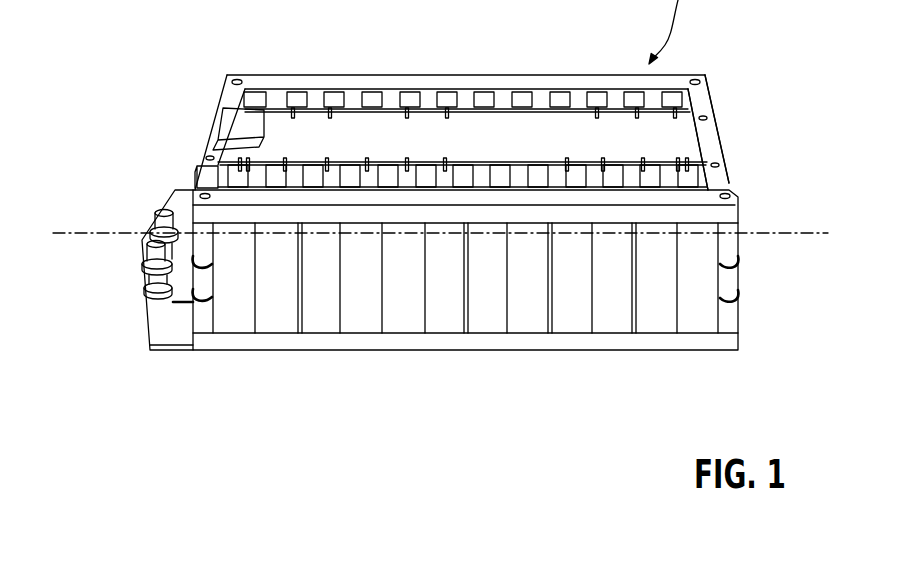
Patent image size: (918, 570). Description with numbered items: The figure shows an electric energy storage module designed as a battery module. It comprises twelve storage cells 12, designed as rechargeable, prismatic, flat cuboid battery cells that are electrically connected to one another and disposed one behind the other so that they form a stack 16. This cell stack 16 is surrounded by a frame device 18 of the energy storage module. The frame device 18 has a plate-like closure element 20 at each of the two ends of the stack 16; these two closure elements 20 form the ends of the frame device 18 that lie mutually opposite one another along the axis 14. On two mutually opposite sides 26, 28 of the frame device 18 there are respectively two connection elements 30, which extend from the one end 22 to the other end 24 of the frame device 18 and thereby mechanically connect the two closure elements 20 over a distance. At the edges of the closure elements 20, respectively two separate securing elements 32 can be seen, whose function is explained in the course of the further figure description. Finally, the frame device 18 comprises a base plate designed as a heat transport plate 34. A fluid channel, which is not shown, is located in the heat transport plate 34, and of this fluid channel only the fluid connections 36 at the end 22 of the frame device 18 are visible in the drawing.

The storage cells 12 is at (317, 323).
The axis 14 is at (73, 233).
The stack 16 is at (671, 99).
The frame device 18 is at (221, 74).
The closure element 20 is at (705, 133).
The end 22 is at (210, 128).
The end 24 is at (755, 325).
The side 26 is at (582, 317).
The side 28 is at (459, 73).
The connection element 30 is at (728, 183).
The securing element 32 is at (192, 296).
The heat transport plate 34 is at (157, 323).
The fluid connections 36 is at (165, 212).